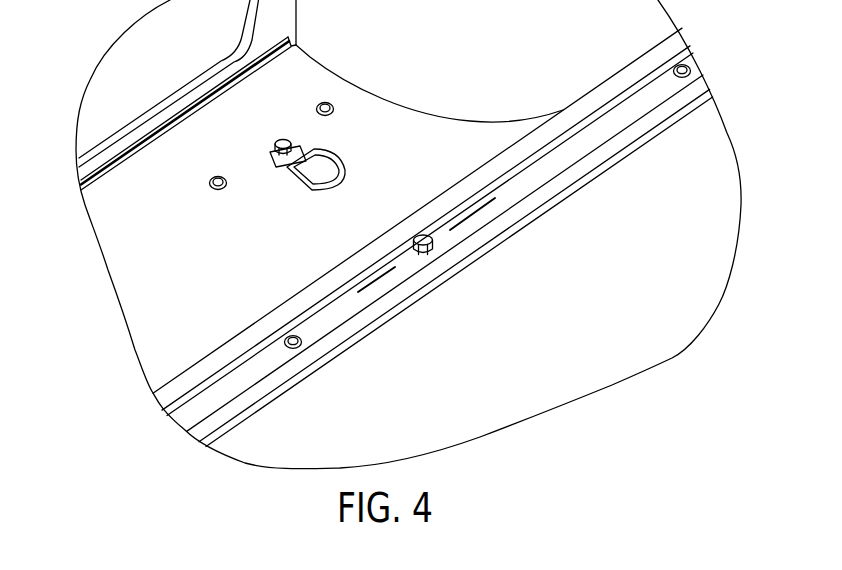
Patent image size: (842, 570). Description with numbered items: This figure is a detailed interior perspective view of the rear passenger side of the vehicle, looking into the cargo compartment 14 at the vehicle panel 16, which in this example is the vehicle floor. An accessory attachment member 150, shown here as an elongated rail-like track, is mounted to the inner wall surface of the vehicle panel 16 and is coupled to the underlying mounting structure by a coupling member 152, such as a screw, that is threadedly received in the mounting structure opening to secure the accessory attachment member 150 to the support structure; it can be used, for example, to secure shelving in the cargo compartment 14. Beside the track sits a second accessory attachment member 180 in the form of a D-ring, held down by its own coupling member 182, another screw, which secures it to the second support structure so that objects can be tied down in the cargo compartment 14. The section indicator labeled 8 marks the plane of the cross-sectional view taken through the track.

The cargo compartment 14 is at (683, 157).
The vehicle panel 16 is at (670, 300).
The accessory attachment member 150 is at (565, 180).
The coupling member 152 is at (420, 238).
The second accessory attachment member 180 is at (296, 193).
The coupling member 182 is at (281, 141).
The section line 8- 8 is at (495, 198).